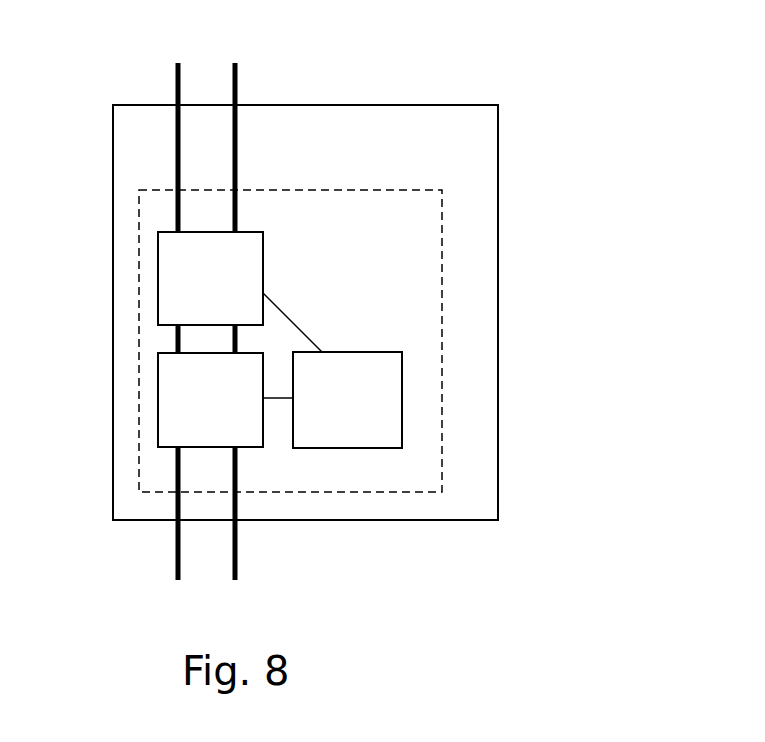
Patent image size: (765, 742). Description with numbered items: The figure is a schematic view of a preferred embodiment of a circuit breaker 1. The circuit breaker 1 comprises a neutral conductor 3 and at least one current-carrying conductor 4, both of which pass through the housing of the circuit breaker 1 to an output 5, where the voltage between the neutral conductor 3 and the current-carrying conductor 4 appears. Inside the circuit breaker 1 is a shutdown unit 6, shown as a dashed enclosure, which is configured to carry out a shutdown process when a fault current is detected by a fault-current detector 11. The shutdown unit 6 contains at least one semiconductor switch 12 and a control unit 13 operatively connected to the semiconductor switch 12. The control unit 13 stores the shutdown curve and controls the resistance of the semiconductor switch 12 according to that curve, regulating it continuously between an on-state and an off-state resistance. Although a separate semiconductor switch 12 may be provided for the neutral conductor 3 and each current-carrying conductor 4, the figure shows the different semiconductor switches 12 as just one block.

The circuit breaker 1 is at (477, 113).
The neutral conductor 3 is at (239, 77).
The current-carrying conductor 4 is at (173, 82).
The output 5 is at (268, 541).
The shutdown unit 6 is at (290, 341).
The fault-current detector 11 is at (210, 278).
The semiconductor switch 12 is at (210, 400).
The control unit 13 is at (332, 370).